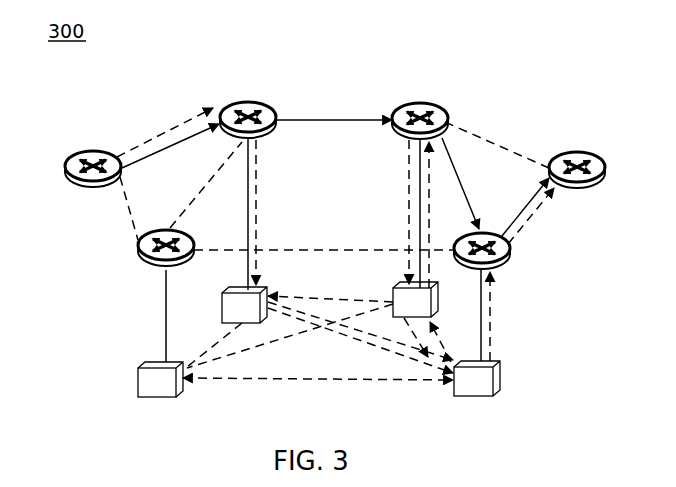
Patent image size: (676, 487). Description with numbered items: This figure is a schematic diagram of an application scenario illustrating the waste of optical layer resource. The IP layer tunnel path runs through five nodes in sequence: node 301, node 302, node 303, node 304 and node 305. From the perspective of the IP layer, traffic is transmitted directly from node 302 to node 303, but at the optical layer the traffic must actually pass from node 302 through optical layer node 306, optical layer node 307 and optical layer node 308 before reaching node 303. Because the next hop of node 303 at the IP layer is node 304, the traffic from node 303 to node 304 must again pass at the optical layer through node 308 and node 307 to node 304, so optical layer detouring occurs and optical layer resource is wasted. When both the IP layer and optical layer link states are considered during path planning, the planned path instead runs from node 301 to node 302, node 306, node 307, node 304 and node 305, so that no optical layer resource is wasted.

The IP layer node 301 is at (70, 171).
The IP layer node 302 is at (248, 106).
The IP layer node 303 is at (420, 106).
The IP layer node 304 is at (506, 253).
The IP layer node 305 is at (577, 155).
The optical layer node 306 is at (269, 297).
The optical layer node 307 is at (501, 378).
The optical layer node 308 is at (393, 294).